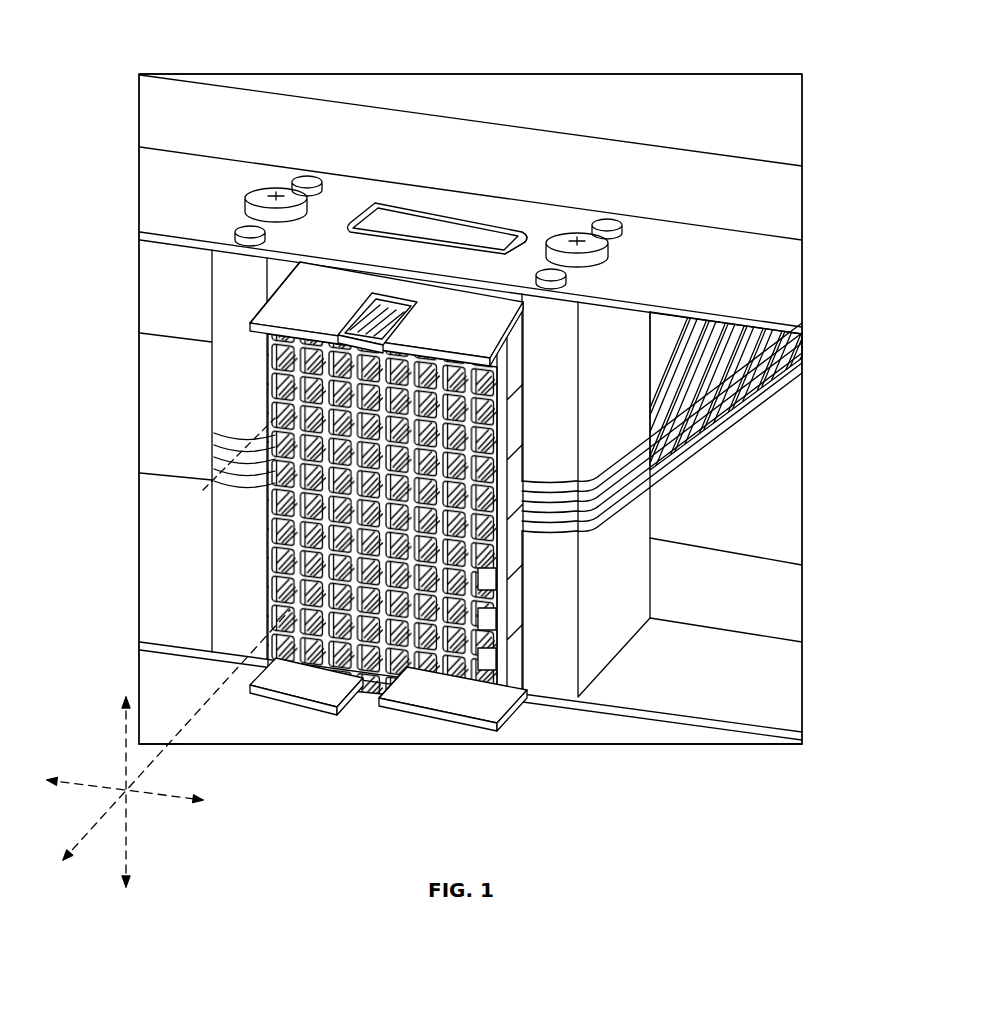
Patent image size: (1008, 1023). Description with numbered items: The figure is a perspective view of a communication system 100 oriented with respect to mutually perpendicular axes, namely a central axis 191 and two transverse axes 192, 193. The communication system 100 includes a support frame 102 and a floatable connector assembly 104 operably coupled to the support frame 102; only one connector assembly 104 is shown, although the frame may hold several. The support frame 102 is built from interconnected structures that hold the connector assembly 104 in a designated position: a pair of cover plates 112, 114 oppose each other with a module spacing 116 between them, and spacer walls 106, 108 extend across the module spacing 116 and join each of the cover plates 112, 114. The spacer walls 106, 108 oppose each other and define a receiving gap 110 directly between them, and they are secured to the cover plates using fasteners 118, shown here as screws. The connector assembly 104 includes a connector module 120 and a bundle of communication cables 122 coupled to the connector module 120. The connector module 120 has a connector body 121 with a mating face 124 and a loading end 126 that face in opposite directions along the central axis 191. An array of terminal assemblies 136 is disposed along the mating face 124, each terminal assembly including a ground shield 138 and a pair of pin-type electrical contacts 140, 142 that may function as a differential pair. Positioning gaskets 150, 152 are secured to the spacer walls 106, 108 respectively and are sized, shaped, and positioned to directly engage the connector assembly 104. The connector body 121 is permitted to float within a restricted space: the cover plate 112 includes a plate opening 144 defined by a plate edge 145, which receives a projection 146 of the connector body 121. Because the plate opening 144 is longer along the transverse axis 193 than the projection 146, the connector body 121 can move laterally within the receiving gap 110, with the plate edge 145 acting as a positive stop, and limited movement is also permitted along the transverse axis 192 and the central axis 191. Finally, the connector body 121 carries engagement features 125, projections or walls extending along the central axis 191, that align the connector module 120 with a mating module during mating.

The communication system 100 is at (755, 35).
The support frame 102 is at (820, 323).
The connector assembly 104 is at (516, 699).
The spacer wall 106 is at (217, 385).
The spacer wall 108 is at (628, 548).
The receiving gap 110 is at (453, 540).
The cover plate 112 is at (786, 302).
The cover plate 114 is at (733, 733).
The module spacing 116 is at (703, 638).
The fastener 118 is at (592, 243).
The connector module 120 is at (262, 293).
The connector body 121 is at (518, 680).
The communication cables 122 is at (713, 365).
The mating face 124 is at (333, 667).
The engagement features 125 is at (308, 293).
The loading end 126 is at (663, 428).
The terminal assemblies 136 is at (462, 686).
The ground shield 138 is at (470, 675).
The electrical contact 140 is at (483, 660).
The electrical contact 142 is at (478, 675).
The plate opening 144 is at (523, 226).
The plate edge 145 is at (528, 240).
The projection 146 is at (433, 223).
The positioning gasket 150 is at (217, 453).
The positioning gasket 152 is at (590, 474).
The central axis 191 is at (163, 750).
The transverse axis 192 is at (125, 740).
The transverse axis 193 is at (85, 782).